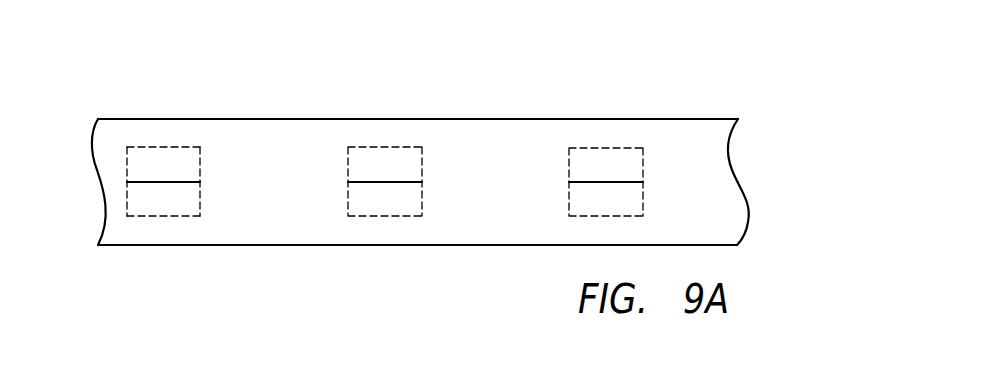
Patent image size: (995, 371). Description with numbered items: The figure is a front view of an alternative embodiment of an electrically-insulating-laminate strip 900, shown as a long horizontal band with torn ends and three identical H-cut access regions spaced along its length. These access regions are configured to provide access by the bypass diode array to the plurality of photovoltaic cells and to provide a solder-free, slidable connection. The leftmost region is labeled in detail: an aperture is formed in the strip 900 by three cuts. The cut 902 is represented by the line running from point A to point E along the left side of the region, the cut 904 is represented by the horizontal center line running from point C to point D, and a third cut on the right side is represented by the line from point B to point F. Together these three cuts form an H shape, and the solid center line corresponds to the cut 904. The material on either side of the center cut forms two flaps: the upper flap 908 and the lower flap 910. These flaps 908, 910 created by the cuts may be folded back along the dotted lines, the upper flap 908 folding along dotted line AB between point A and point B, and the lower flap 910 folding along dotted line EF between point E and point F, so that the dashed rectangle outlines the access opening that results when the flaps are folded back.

The electrically-insulating-laminate strip 900 is at (418, 79).
The cut 902 is at (127, 167).
The cut 904 is at (163, 183).
The flap 908 is at (172, 158).
The flap 910 is at (153, 205).
The point A is at (127, 147).
The point B is at (200, 148).
The point C is at (127, 182).
The point D is at (200, 181).
The point E is at (127, 216).
The point F is at (200, 216).